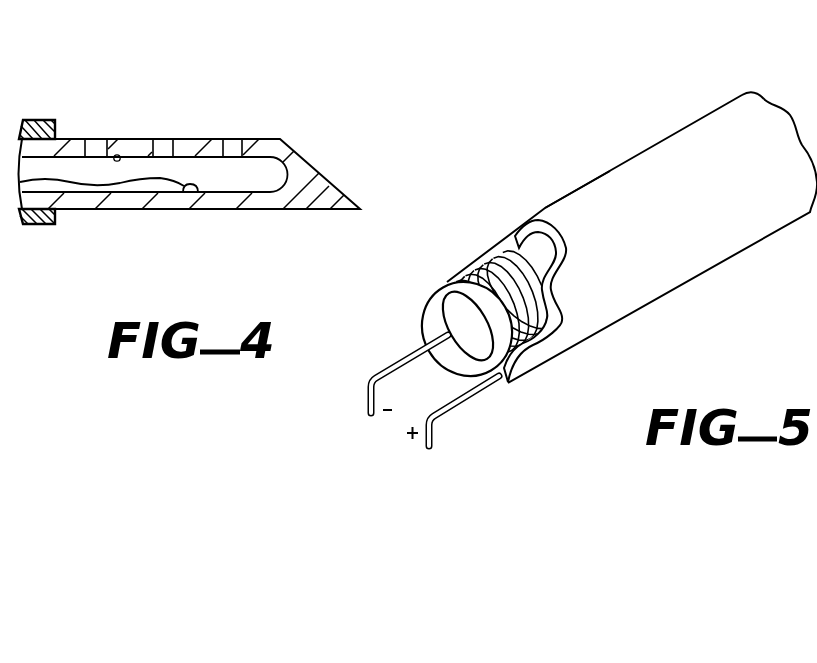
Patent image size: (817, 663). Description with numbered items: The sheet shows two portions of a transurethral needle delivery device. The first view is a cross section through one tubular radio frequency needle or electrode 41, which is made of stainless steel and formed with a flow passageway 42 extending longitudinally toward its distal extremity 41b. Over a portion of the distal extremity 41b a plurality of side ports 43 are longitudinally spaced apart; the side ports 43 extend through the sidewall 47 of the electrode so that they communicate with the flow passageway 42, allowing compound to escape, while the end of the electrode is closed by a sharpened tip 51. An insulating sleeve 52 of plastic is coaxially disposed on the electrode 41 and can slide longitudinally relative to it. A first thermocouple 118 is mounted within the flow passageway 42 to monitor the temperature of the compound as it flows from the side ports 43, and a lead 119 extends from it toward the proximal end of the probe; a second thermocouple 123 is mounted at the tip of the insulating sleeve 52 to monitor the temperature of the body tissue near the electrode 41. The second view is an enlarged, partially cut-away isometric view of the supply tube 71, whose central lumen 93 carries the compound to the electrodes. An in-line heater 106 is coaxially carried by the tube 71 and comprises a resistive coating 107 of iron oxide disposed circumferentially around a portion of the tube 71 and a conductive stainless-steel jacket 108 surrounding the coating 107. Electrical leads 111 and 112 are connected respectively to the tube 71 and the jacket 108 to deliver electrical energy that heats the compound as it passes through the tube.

In FIG. 4, the tubular radio frequency needle or electrode 41 is at (304, 216).
In FIG. 4, the distal extremity of electrode 41b is at (172, 210).
In FIG. 4, the flow passageway 42 is at (122, 142).
In FIG. 4, the side ports 43 is at (232, 139).
In FIG. 4, the sidewall of electrode 47 is at (237, 198).
In FIG. 4, the closed sharpened tip 51 is at (318, 177).
In FIG. 4, the insulating sleeve 52 is at (38, 225).
In FIG. 4, the first thermocouple 118 is at (199, 187).
In FIG. 4, the lead 119 is at (132, 190).
In FIG. 4, the second thermocouple 123 is at (60, 137).
In FIG. 5, the tube 71 is at (445, 297).
In FIG. 5, the central lumen 93 is at (470, 307).
In FIG. 5, the in-line heater 106 is at (628, 152).
In FIG. 5, the resistive coating 107 is at (532, 295).
In FIG. 5, the jacket 108 is at (690, 235).
In FIG. 5, the electrical lead 111 is at (467, 397).
In FIG. 5, the electrical lead 112 is at (408, 358).